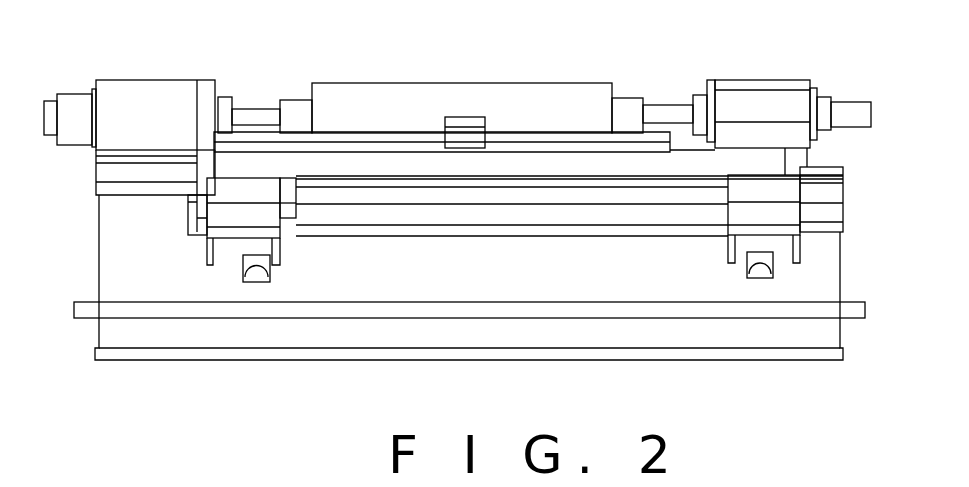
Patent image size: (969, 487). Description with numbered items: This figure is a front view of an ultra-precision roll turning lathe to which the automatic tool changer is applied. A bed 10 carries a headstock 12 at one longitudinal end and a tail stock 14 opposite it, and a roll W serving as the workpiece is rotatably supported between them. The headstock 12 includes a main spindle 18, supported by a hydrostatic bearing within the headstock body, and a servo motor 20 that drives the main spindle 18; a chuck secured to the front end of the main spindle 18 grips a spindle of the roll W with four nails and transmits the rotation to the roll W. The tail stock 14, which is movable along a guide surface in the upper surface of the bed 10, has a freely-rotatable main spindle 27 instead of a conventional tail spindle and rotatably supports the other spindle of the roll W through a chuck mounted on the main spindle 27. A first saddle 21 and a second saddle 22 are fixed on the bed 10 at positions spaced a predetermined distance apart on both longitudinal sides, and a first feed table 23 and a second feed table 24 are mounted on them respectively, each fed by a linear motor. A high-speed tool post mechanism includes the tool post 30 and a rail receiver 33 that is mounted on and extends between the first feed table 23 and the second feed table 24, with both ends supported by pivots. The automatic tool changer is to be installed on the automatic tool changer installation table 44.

The bed 10 is at (818, 278).
The headstock 12 is at (156, 92).
The tail stock 14 is at (758, 80).
The main spindle 18 is at (222, 108).
The servo motor 20 is at (77, 110).
The first saddle 21 is at (237, 217).
The second saddle 22 is at (545, 140).
The first feed table 23 is at (222, 193).
The second feed table 24 is at (772, 192).
The main spindle 27 is at (697, 100).
The tool post 30 is at (470, 135).
The rail receiver 33 is at (333, 157).
The automatic tool changer installation table 44 is at (122, 182).
The roll W is at (398, 100).